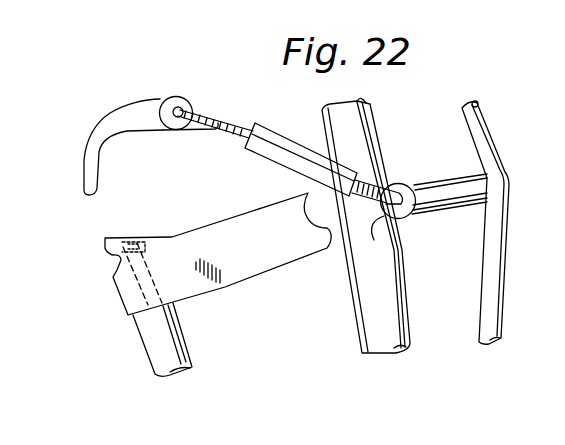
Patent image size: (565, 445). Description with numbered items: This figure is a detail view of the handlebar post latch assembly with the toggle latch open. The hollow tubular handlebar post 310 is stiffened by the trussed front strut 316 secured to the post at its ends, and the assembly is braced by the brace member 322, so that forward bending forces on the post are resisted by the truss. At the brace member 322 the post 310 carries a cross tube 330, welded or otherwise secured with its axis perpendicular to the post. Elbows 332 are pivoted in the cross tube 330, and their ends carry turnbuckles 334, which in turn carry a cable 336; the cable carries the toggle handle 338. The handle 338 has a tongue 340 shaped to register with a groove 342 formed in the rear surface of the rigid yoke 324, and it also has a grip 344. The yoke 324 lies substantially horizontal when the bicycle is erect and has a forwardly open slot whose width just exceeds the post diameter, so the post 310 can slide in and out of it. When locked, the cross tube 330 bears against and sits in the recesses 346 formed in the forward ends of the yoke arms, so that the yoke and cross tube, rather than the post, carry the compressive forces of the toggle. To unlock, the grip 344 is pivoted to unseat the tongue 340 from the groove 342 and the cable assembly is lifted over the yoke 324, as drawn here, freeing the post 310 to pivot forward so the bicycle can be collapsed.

The handlebar post 310 is at (405, 308).
The trussed front strut 316 is at (483, 122).
The brace member 322 is at (452, 181).
The yoke 324 is at (228, 283).
The cross tube 330 is at (398, 183).
The elbows 332 is at (370, 224).
The turnbuckles 334 is at (292, 146).
The cable 336 is at (227, 117).
The toggle handle 338 is at (161, 99).
The tongue 340 is at (208, 132).
The groove 342 is at (115, 260).
The grip 344 is at (92, 126).
The recesses 346 is at (328, 249).